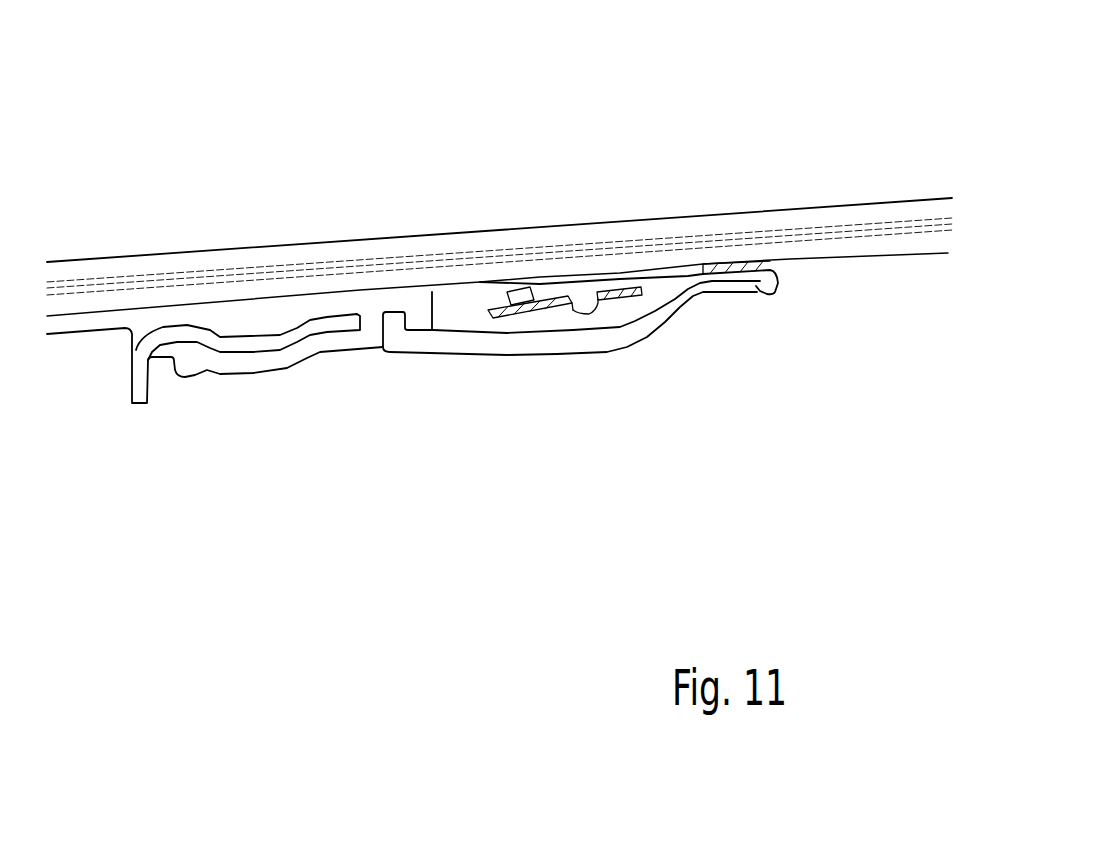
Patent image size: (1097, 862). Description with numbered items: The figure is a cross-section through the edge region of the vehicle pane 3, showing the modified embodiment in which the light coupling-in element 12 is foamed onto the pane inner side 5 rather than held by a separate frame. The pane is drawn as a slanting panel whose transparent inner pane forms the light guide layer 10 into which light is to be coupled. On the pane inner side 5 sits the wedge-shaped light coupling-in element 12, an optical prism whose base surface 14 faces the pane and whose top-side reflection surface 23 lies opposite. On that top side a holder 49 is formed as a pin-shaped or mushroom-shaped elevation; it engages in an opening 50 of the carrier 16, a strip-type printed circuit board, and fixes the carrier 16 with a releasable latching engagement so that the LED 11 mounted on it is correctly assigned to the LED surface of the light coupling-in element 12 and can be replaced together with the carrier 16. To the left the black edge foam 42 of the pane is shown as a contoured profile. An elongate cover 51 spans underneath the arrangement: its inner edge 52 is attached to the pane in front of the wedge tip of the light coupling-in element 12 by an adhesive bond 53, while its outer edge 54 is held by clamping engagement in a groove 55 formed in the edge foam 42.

The vehicle pane 3 is at (818, 206).
The pane inner side 5 is at (913, 261).
The light guide layer 10 is at (871, 244).
The LED 11 is at (518, 294).
The light coupling-in element 12 is at (558, 292).
The base surface 14 is at (620, 273).
The carrier 16 is at (504, 314).
The top-side reflection surface 23 is at (649, 292).
The edge foam 42 is at (257, 318).
The holder 49 is at (578, 319).
The opening 50 is at (580, 296).
The cover 51 is at (615, 356).
The inner edge 52 is at (755, 287).
The adhesive bond 53 is at (745, 270).
The outer edge 54 is at (395, 338).
The groove 55 is at (383, 311).